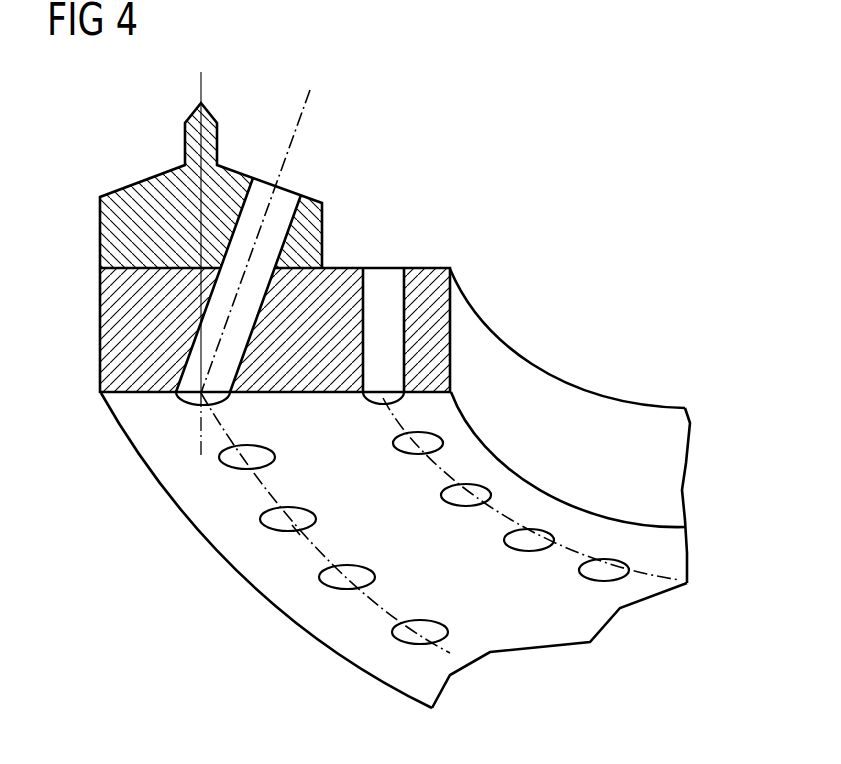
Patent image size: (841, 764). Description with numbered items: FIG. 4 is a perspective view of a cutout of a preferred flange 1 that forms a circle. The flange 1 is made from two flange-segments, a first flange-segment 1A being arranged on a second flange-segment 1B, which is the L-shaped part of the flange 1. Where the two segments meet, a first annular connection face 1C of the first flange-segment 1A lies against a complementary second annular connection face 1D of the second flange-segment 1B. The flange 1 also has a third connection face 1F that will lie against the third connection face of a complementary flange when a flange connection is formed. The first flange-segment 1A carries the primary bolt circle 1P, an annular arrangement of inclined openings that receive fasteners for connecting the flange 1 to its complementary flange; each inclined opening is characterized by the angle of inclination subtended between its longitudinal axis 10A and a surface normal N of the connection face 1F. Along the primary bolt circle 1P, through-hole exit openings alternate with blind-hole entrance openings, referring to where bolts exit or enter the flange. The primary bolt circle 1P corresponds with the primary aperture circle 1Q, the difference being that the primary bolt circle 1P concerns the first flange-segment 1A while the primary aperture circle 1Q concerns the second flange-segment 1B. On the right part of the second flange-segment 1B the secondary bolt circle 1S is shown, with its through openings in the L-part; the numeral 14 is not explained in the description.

The flange 1 is at (88, 577).
The first flange-segment 1A is at (153, 187).
The second flange-segment 1B is at (490, 318).
The first annular connection face 1C is at (121, 266).
The second annular connection face 1D is at (110, 275).
The third annular connection face 1F is at (105, 402).
The primary bolt circle 1P is at (312, 541).
The primary aperture circle 1Q is at (267, 492).
The secondary bolt circle 1S is at (653, 580).
The longitudinal axis 10A is at (307, 107).
The through hole outlet 14 is at (412, 398).
The surface normal N is at (207, 410).